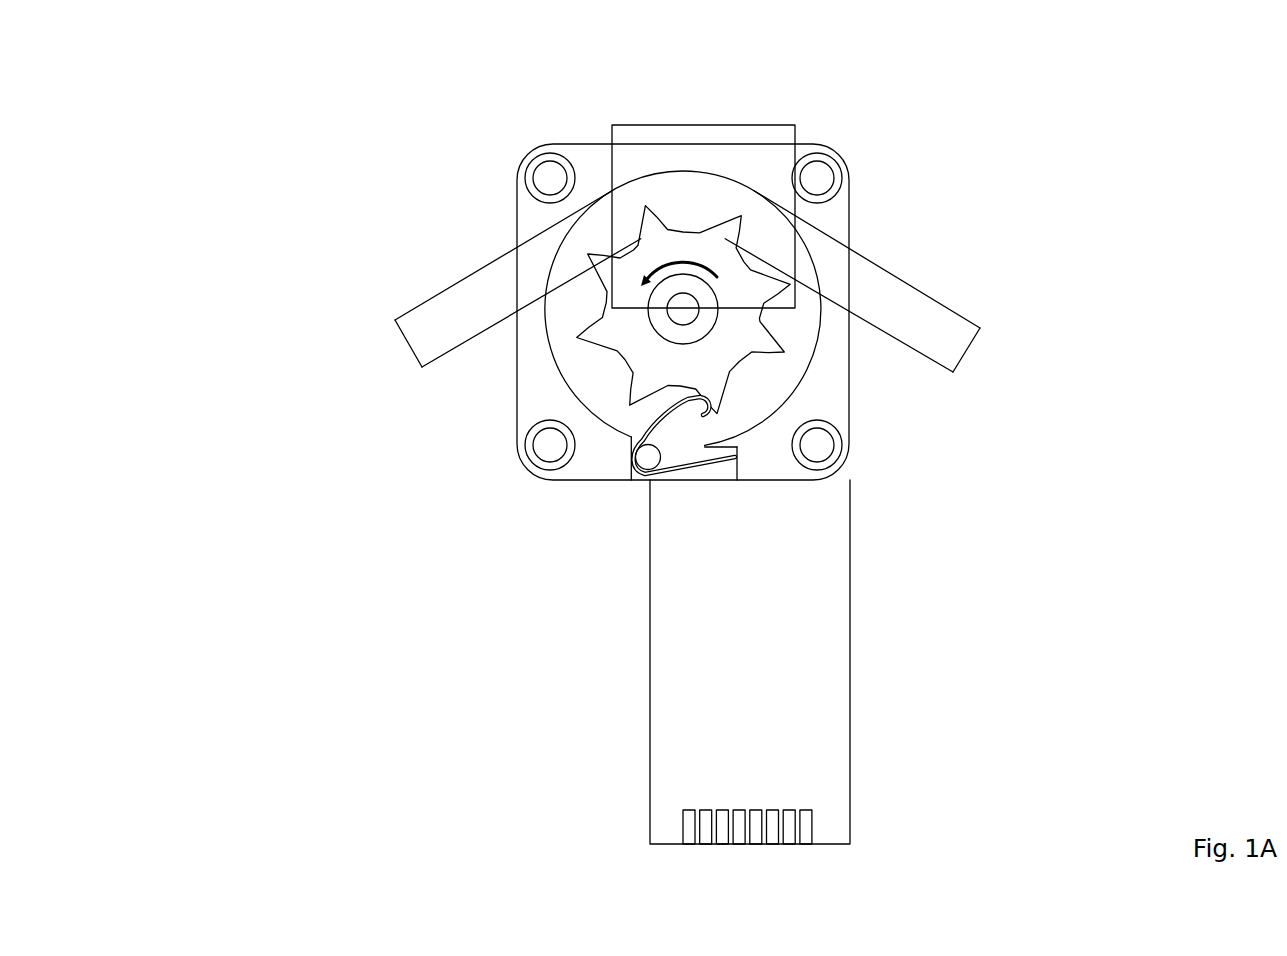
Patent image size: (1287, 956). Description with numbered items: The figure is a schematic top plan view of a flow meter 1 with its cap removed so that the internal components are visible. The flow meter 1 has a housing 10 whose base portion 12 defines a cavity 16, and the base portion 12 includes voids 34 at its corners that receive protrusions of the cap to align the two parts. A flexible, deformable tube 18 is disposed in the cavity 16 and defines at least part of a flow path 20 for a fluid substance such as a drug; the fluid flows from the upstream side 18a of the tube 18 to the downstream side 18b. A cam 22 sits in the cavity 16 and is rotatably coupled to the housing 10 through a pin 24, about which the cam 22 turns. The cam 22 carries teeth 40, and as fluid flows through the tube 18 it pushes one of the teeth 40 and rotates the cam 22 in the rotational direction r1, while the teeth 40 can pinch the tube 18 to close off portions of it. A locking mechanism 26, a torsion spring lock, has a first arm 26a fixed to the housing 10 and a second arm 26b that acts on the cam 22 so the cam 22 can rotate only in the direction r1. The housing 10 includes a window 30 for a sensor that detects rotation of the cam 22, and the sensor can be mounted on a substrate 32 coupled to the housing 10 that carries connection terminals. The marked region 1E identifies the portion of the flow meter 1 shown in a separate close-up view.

The flow meter 1 is at (215, 167).
The housing 10 is at (516, 134).
The base portion 12 is at (604, 148).
The close-up view of a portion of the flow meter 1E is at (662, 125).
The cavity 16 is at (548, 337).
The tube 18 is at (882, 287).
The upstream side 18a is at (981, 328).
The downstream side 18b is at (397, 325).
The flow path 20 is at (923, 333).
The cam 22 is at (750, 275).
The pin 24 is at (667, 328).
The locking mechanism 26 is at (690, 447).
The first arm 26a is at (685, 469).
The second arm 26b is at (640, 440).
The window 30 is at (780, 373).
The substrate 32 is at (830, 738).
The voids 34 is at (833, 164).
The teeth 40 is at (650, 211).
The rotational direction r1 is at (680, 260).